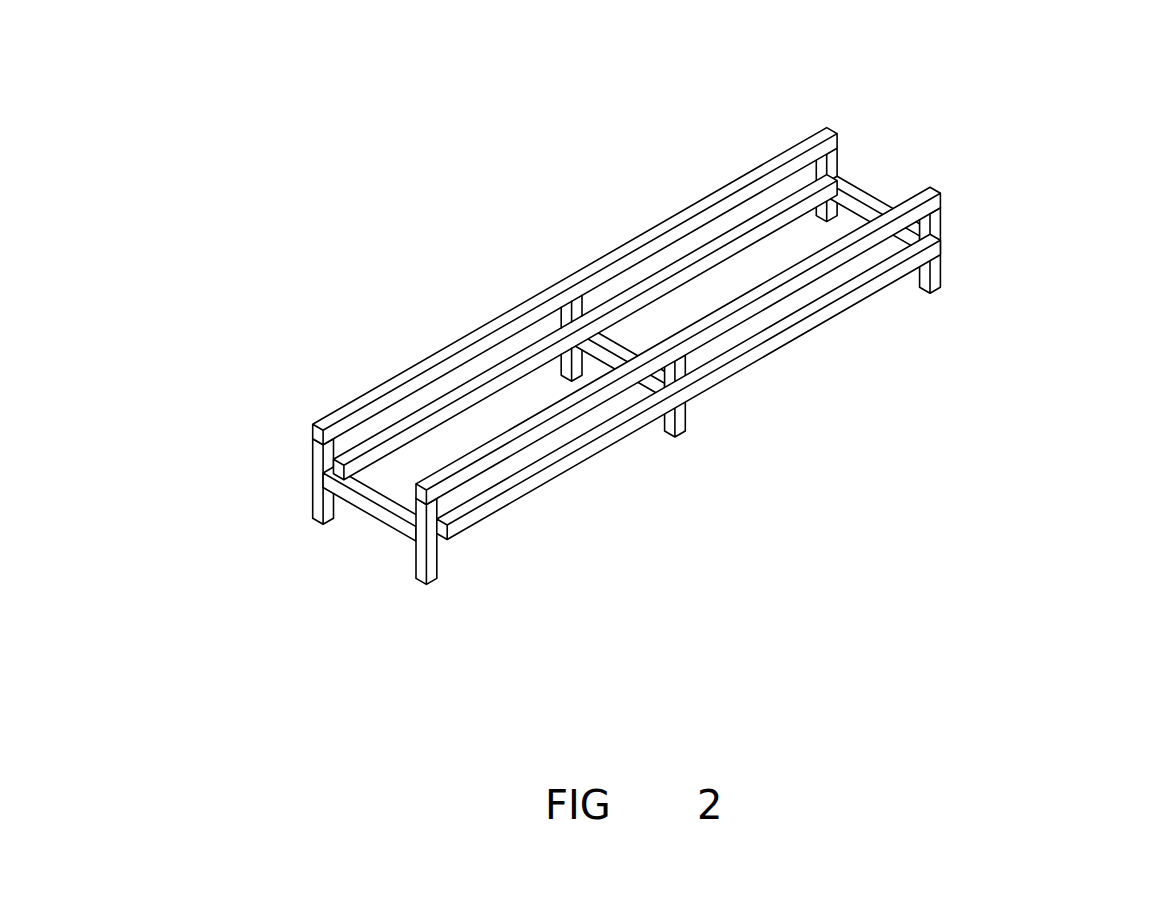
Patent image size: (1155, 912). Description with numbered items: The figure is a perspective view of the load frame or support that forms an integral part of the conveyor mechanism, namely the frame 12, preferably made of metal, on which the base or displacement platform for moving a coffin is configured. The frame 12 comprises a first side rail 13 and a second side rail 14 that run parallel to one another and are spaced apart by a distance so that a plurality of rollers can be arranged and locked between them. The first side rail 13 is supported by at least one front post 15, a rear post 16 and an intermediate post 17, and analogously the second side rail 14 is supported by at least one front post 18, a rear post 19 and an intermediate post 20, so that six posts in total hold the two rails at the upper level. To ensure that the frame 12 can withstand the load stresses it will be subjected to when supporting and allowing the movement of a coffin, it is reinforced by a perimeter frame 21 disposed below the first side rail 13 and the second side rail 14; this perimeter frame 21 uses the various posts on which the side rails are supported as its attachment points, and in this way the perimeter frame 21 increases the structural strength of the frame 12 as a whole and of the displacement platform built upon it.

The frame 12 is at (626, 352).
The first side rail 13 is at (409, 349).
The second side rail 14 is at (795, 290).
The front post 15 is at (301, 519).
The rear post 16 is at (852, 130).
The intermediate post 17 is at (582, 378).
The front post 18 is at (404, 584).
The rear post 19 is at (950, 243).
The intermediate post 20 is at (703, 415).
The perimeter frame 21 is at (516, 505).